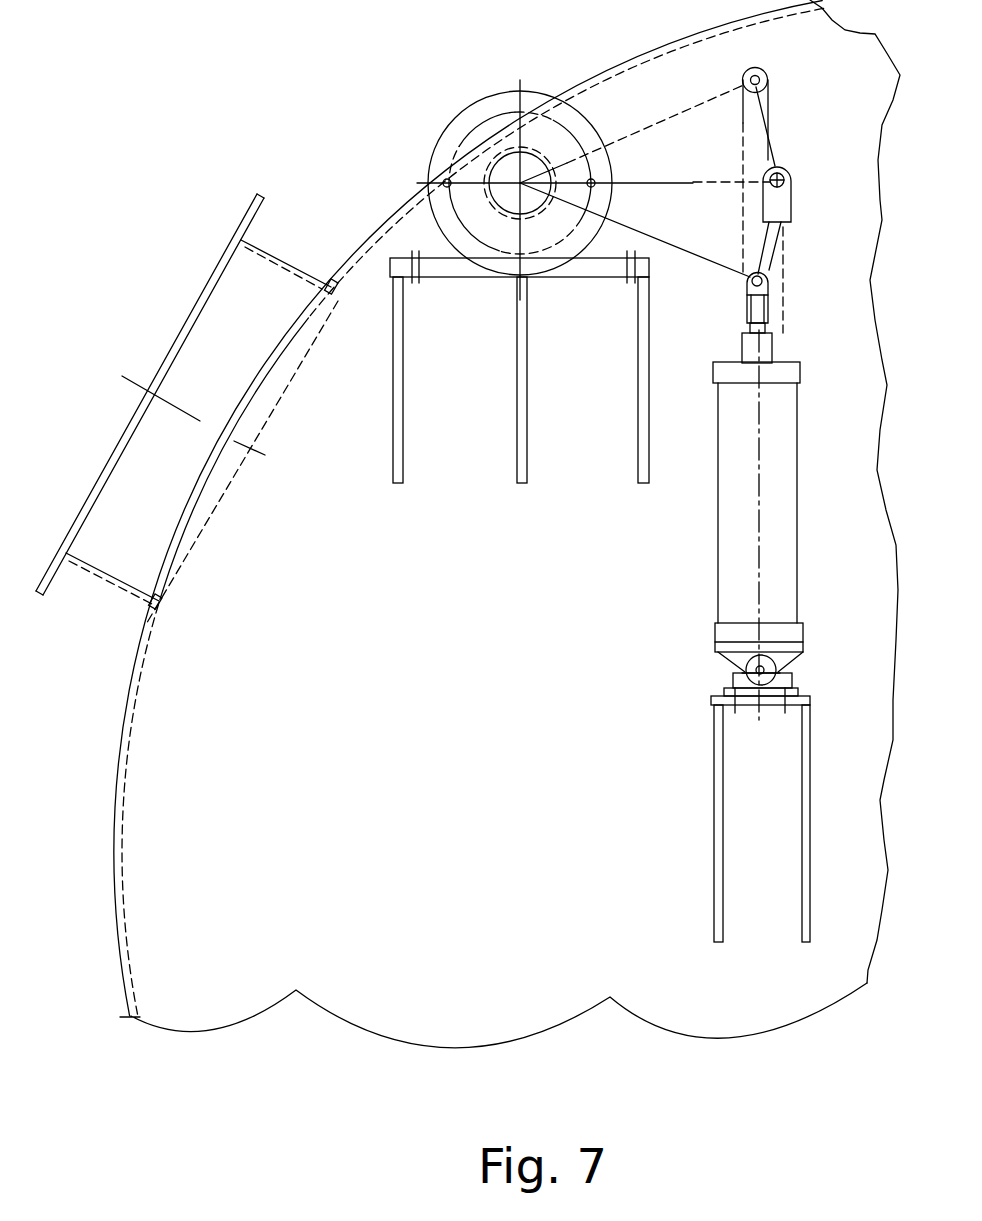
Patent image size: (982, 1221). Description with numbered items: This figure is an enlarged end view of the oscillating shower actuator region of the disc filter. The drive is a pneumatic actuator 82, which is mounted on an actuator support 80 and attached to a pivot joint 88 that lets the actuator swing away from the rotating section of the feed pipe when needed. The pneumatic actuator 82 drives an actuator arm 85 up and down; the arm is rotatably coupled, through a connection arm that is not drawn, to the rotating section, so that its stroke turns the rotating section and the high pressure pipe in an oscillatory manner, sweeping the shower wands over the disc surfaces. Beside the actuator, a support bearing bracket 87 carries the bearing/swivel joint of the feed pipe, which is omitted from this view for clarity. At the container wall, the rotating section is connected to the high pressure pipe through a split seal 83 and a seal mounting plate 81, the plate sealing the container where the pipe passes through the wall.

The actuator support 80 is at (665, 823).
The seal mounting plate 81 is at (560, 97).
The pneumatic actuator 82 is at (718, 505).
The split seal 83 is at (573, 137).
The actuator arm 85 is at (770, 92).
The support bearing bracket 87 is at (637, 434).
The pivot joint 88 is at (798, 680).